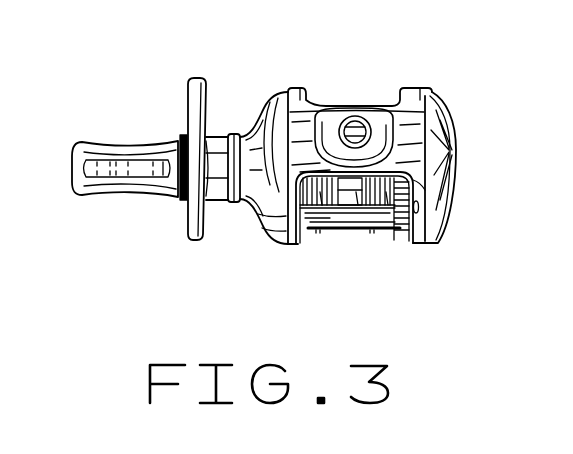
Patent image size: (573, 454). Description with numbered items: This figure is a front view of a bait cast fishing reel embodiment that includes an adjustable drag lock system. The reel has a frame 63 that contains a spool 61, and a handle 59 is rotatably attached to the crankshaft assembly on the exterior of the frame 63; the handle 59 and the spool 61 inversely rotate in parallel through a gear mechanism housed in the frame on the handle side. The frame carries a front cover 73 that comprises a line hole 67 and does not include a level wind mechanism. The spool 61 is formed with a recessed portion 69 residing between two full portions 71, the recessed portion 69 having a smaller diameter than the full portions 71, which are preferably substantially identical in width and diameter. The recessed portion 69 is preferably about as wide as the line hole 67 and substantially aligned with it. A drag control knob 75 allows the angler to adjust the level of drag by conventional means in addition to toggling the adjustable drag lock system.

The handle 59 is at (110, 120).
The spool 61 is at (350, 210).
The frame 63 is at (262, 126).
The line hole 67 is at (378, 125).
The recessed portion 69 is at (362, 210).
The full portions 71 is at (323, 210).
The front cover 73 is at (405, 125).
The drag control knob 75 is at (198, 68).